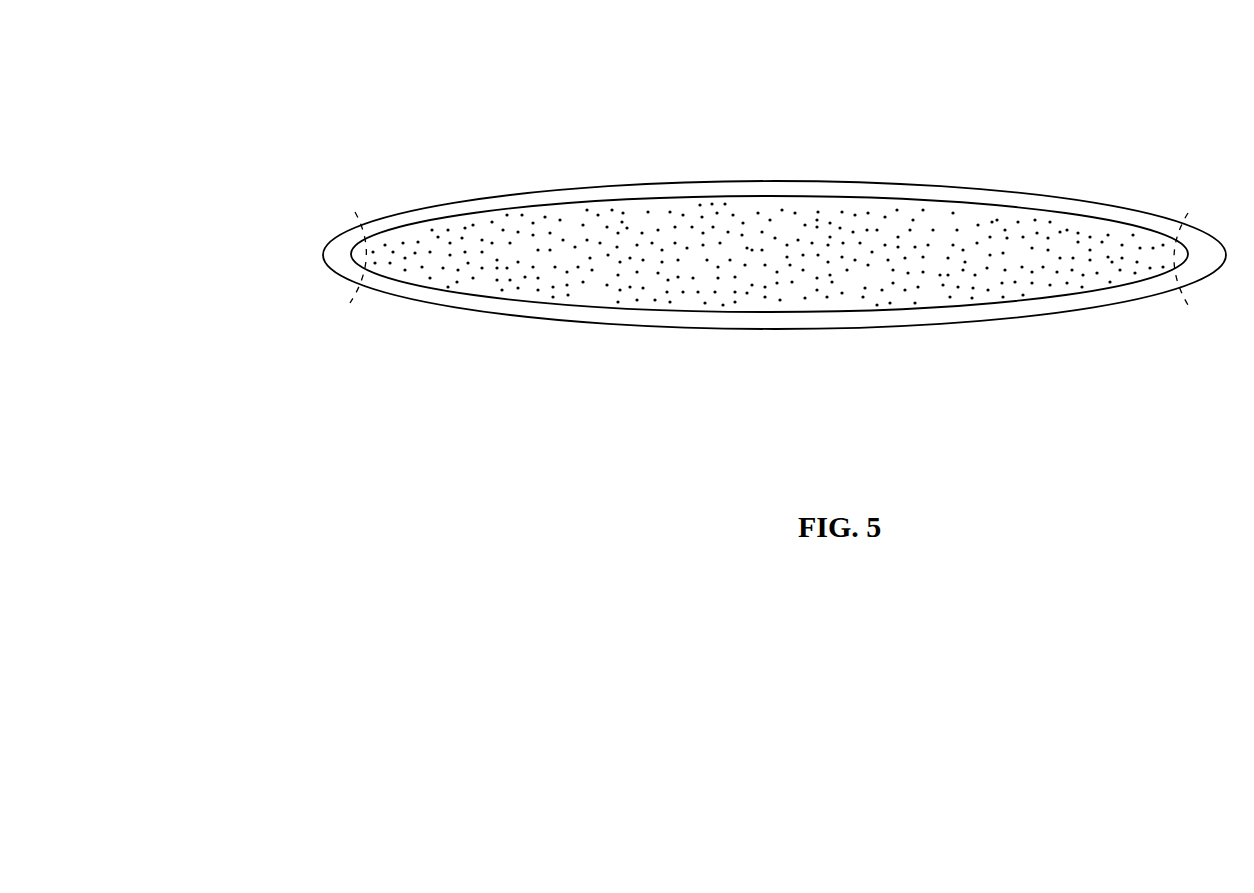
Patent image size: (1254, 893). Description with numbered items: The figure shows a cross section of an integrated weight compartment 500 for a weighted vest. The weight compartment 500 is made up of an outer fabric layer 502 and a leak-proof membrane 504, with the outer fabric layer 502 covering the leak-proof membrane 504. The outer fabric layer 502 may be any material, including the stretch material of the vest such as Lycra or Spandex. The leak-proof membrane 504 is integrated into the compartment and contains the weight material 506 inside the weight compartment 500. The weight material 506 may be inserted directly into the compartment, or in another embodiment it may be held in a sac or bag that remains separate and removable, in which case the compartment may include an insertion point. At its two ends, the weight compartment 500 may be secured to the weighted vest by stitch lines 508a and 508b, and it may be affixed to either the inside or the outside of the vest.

The weight compartment 500 is at (699, 205).
The outer fabric layer 502 is at (1030, 190).
The leak-proof membrane 504 is at (1125, 219).
The weight material 506 is at (931, 277).
The stitch line 508a is at (331, 314).
The stitch line 508b is at (1173, 292).